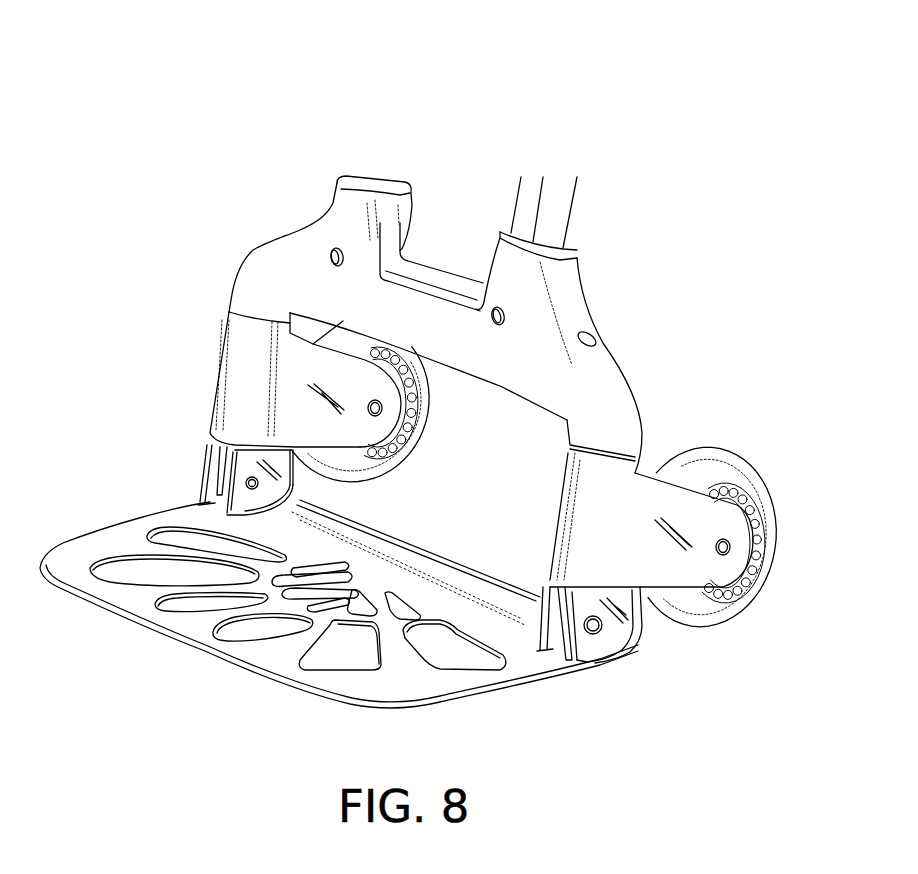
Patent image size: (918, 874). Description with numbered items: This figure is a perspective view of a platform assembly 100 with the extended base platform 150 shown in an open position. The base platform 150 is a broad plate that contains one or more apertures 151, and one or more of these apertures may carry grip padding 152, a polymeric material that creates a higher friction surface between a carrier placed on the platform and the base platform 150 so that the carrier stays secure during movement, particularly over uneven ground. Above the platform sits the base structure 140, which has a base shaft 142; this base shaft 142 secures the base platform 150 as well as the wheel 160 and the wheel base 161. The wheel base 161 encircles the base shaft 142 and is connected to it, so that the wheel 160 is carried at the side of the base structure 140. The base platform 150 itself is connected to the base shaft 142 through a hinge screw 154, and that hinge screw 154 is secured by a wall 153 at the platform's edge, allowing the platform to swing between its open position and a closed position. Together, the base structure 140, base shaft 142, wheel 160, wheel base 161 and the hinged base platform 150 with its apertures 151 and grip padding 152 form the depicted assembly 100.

The ride-on toy / scooter 100 is at (405, 396).
The base structure 140 is at (297, 246).
The base shaft 142 is at (563, 628).
The base platform 150 is at (267, 680).
The aperture 151 is at (193, 612).
The grip padding 152 is at (106, 563).
The wall 153 is at (617, 635).
The hinge screw 154 is at (593, 630).
The wheel 160 is at (730, 452).
The wheel base 161 is at (637, 475).